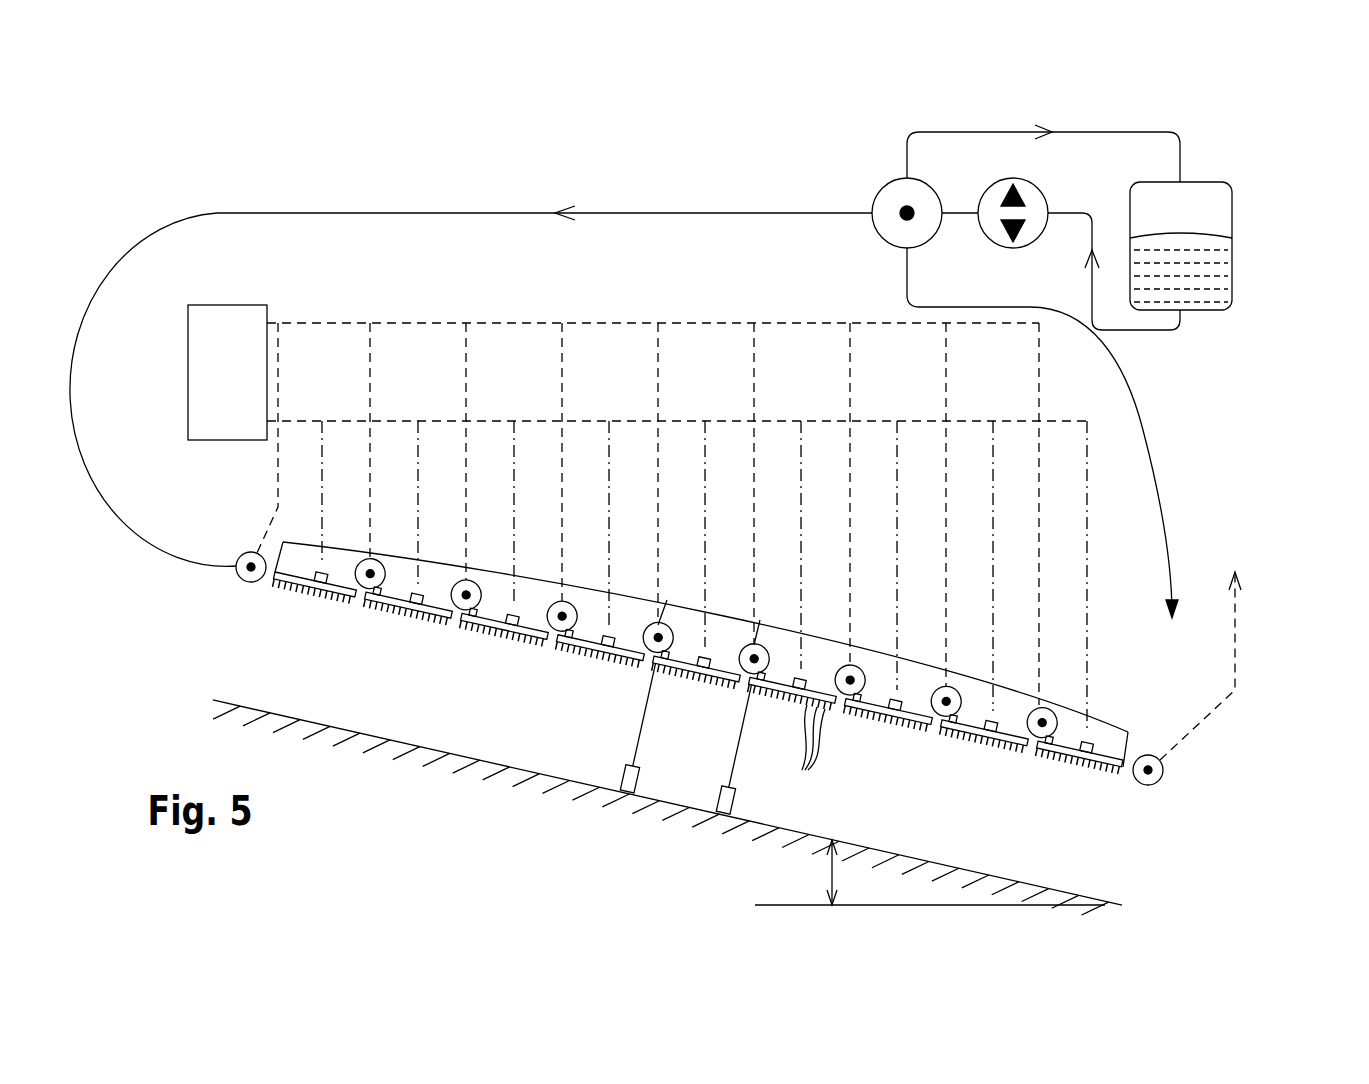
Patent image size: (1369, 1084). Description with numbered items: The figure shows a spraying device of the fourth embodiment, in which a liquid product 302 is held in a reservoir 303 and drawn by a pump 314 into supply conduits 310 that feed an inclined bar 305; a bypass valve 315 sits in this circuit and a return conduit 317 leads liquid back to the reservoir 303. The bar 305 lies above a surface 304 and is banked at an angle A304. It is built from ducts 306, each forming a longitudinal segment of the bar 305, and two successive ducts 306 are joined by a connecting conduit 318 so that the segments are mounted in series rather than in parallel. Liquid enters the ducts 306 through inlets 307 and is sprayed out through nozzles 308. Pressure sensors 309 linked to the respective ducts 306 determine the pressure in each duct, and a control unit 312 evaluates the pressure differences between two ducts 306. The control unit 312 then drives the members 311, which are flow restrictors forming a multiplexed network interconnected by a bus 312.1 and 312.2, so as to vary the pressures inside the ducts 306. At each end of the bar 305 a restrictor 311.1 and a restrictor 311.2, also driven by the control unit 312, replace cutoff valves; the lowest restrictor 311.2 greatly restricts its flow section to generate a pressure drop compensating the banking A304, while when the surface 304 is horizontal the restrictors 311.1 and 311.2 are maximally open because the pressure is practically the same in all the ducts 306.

The liquid product 302 is at (1181, 267).
The reservoir 303 is at (1233, 222).
The surface 304 is at (943, 864).
The angle A304 is at (930, 872).
The bar 305 is at (259, 628).
The ducts 306 is at (518, 640).
The inlets 307 is at (933, 727).
The nozzles 308 is at (801, 751).
The pressure sensors 309 is at (992, 727).
The supply conduits 310 is at (667, 213).
The members 311 is at (858, 708).
The restrictor 311.1 is at (246, 578).
The restrictor 311.2 is at (1156, 785).
The control unit 312 is at (727, 532).
The bus 312.1 is at (318, 421).
The bus 312.2 is at (320, 323).
The pump 314 is at (1003, 178).
The bypass valve 315 is at (880, 192).
The return conduit 317 is at (1182, 160).
The connecting conduits 318 is at (368, 590).